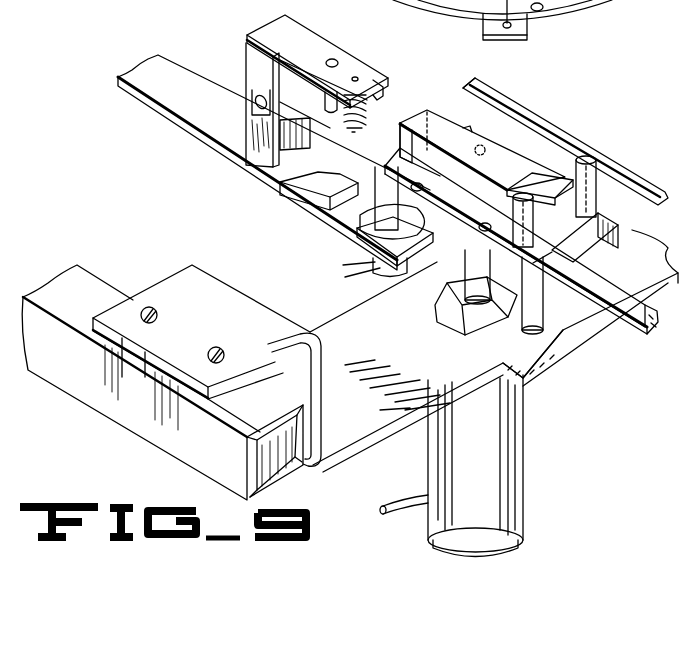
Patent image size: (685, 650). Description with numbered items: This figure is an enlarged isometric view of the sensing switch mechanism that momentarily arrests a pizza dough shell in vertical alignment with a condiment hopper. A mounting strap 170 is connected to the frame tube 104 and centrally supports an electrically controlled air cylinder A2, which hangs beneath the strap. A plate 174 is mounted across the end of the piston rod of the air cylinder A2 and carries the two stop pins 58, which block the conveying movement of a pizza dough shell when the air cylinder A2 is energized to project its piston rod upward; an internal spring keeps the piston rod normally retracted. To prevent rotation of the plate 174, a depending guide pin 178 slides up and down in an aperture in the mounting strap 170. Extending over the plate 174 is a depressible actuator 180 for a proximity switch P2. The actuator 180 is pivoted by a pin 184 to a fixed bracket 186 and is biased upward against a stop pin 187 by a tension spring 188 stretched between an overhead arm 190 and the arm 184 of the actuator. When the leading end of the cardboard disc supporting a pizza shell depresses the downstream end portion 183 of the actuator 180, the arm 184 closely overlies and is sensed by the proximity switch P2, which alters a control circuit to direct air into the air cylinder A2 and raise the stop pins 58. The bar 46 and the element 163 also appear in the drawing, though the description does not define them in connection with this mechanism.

The disc tab 163 is at (527, 30).
The bar 46 is at (514, 100).
The overhead arm 190 is at (282, 28).
The fixed bracket 186 is at (250, 48).
The arm 184 is at (258, 96).
The stop pin 187 is at (332, 95).
The tension spring 188 is at (385, 93).
The depressible actuator 180 is at (498, 151).
The downstream end portion 183 is at (563, 176).
The stop pins 58 is at (592, 160).
The plate 174 is at (610, 222).
The proximity switch P2 is at (372, 206).
The frame tube 104 is at (82, 280).
The mounting strap 170 is at (400, 343).
The guide pin 178 is at (566, 362).
The air cylinder A2 is at (505, 420).